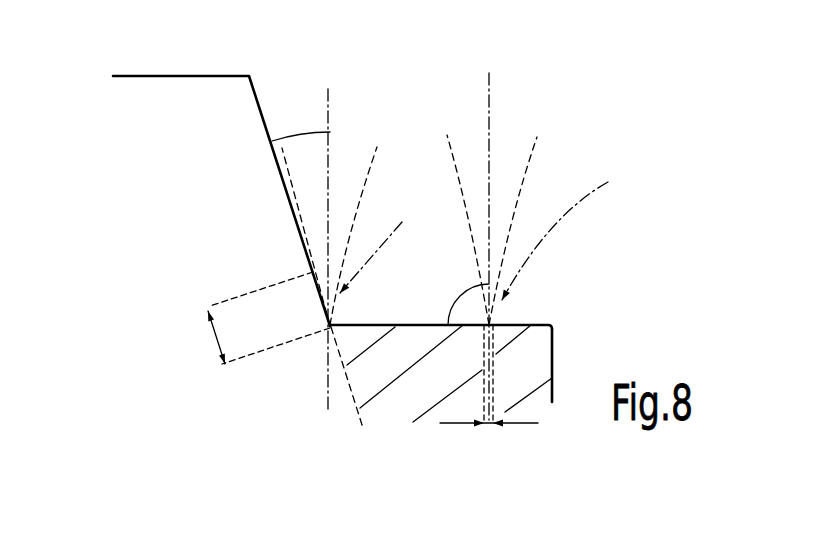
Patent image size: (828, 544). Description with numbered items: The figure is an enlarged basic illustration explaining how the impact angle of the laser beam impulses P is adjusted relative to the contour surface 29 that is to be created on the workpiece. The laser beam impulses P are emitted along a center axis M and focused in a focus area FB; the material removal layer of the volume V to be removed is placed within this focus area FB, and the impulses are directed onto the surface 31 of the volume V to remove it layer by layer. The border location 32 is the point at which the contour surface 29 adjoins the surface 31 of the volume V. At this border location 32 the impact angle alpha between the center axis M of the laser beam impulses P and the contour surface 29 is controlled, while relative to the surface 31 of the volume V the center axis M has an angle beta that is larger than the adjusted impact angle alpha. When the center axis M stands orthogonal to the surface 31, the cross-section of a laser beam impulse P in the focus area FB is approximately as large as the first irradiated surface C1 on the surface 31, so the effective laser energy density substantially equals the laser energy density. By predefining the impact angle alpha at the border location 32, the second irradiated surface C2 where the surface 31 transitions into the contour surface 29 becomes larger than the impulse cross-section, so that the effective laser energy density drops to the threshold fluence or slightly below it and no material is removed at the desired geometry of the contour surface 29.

The contour surface 29 is at (263, 108).
The surface of the volume to be removed 31 is at (528, 325).
The border location 32 is at (330, 333).
The volume to be removed V is at (537, 356).
The center axis M is at (328, 121).
The laser beam impulses P is at (366, 172).
The focus area FB is at (491, 235).
The impact angle alpha is at (302, 143).
The angle of the center axis relative to the surface of the volume to be removed beta is at (470, 305).
The first irradiated surface C1 is at (486, 430).
The second irradiated surface C2 is at (214, 342).